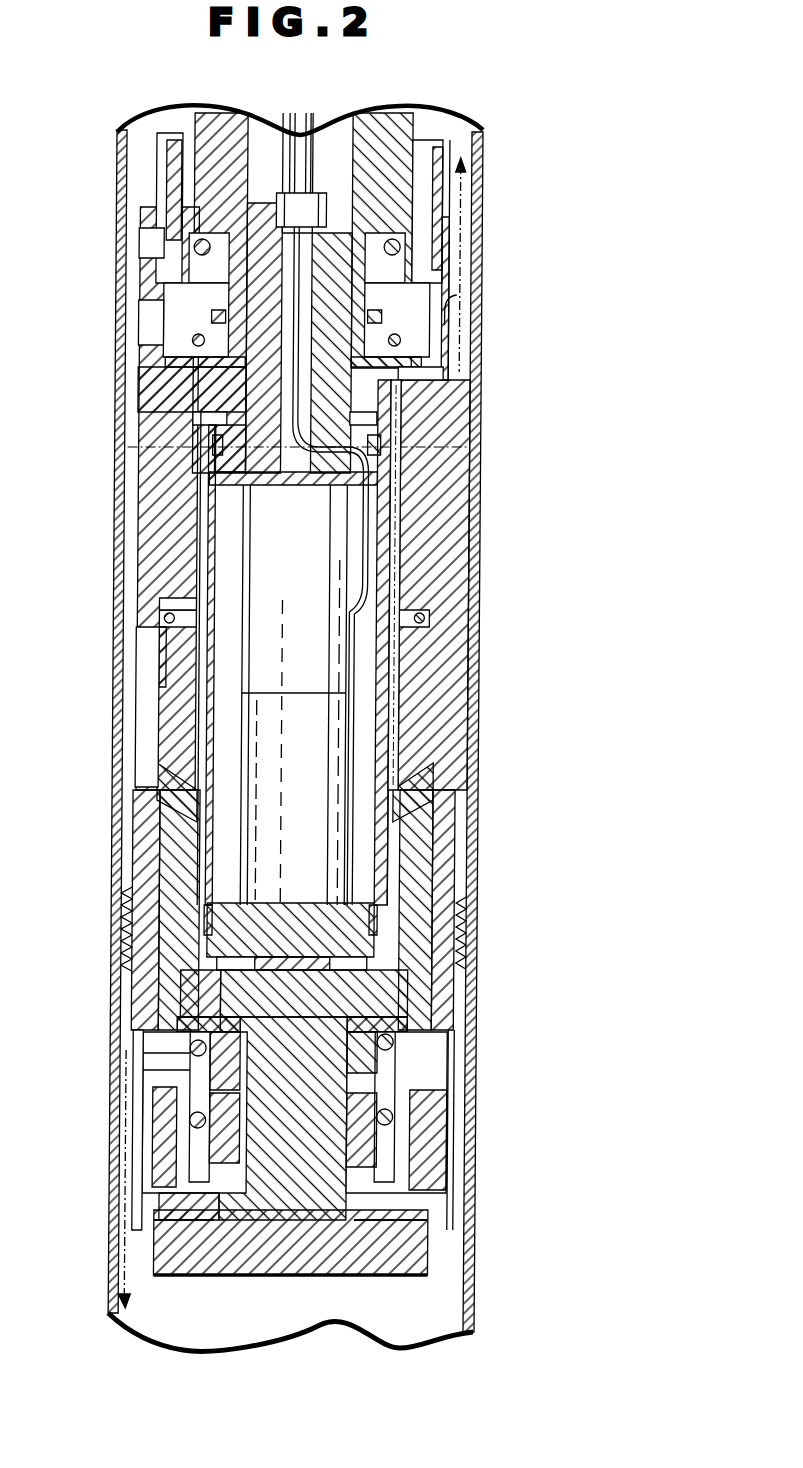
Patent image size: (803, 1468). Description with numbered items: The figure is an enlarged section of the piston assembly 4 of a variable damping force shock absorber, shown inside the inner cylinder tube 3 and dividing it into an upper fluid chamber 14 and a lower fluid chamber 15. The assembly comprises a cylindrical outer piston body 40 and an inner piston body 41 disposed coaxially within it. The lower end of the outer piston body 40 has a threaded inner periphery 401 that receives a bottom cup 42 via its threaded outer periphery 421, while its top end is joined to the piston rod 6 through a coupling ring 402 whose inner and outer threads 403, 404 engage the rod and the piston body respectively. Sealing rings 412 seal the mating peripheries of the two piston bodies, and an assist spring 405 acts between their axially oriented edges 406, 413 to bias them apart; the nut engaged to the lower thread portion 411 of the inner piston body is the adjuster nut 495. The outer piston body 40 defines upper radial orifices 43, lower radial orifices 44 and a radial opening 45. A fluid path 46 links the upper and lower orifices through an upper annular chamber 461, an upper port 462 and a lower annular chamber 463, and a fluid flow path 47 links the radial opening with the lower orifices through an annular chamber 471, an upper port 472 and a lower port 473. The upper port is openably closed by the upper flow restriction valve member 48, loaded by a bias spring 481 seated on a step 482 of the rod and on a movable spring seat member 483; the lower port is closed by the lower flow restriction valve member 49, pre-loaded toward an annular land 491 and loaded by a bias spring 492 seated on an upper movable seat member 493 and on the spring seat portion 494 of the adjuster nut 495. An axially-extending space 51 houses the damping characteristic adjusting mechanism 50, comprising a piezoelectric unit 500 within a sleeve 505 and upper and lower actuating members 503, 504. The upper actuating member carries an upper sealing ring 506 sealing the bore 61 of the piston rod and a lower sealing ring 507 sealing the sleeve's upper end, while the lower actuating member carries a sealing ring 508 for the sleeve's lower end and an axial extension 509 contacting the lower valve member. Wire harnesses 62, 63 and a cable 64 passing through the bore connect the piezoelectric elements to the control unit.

The inner cylinder tube 3 is at (478, 540).
The piston assembly 4 is at (124, 533).
The piston rod 6 is at (445, 124).
The upper fluid chamber 14 is at (142, 160).
The lower fluid chamber 15 is at (241, 1303).
The outer piston body 40 is at (438, 492).
The inner piston body 41 is at (446, 876).
The bottom cup 42 is at (427, 1250).
The upper radial orifices 43 is at (150, 320).
The lower radial orifices 44 is at (144, 1033).
The radial opening 45 is at (152, 690).
The fluid path 46 is at (406, 746).
The fluid flow path 47 is at (190, 895).
The upper flow restriction valve member 48 is at (205, 355).
The lower flow restriction valve member 49 is at (185, 1055).
The damping characteristic adjusting mechanism 50 is at (209, 745).
The axially-extending space 51 is at (192, 418).
The bore 61 is at (447, 166).
The wire harness 62 is at (374, 546).
The wire harness 63 is at (431, 665).
The cable 64 is at (306, 132).
The threaded inner periphery 401 is at (435, 1088).
The coupling ring 402 is at (432, 270).
The inner thread 403 is at (440, 190).
The outer thread 404 is at (432, 214).
The assist spring 405 is at (160, 620).
The axially oriented edge 406 is at (163, 601).
The lower thread portion 411 is at (439, 1195).
The sealing rings 412 is at (430, 625).
The axially oriented edge 413 is at (166, 655).
The threaded outer periphery 421 is at (427, 1230).
The upper annular chamber 461 is at (448, 303).
The upper port 462 is at (432, 386).
The lower annular chamber 463 is at (429, 1052).
The annular chamber 471 is at (408, 698).
The upper port 472 is at (180, 790).
The lower port 473 is at (239, 1012).
The bias spring 481 is at (145, 237).
The step 482 is at (198, 243).
The movable spring seat member 483 is at (208, 308).
The annular land 491 is at (203, 1017).
The bias spring 492 is at (204, 1122).
The upper movable seat member 493 is at (195, 1090).
The spring seat portion 494 is at (179, 1190).
The adjuster nut 495 is at (207, 1212).
The piezoelectric unit 500 is at (258, 505).
The upper actuating member 503 is at (212, 470).
The lower actuating member 504 is at (261, 848).
The sleeve 505 is at (206, 560).
The upper sealing ring 506 is at (422, 250).
The lower sealing ring 507 is at (408, 470).
The sealing ring 508 is at (432, 410).
The axial extension 509 is at (247, 990).